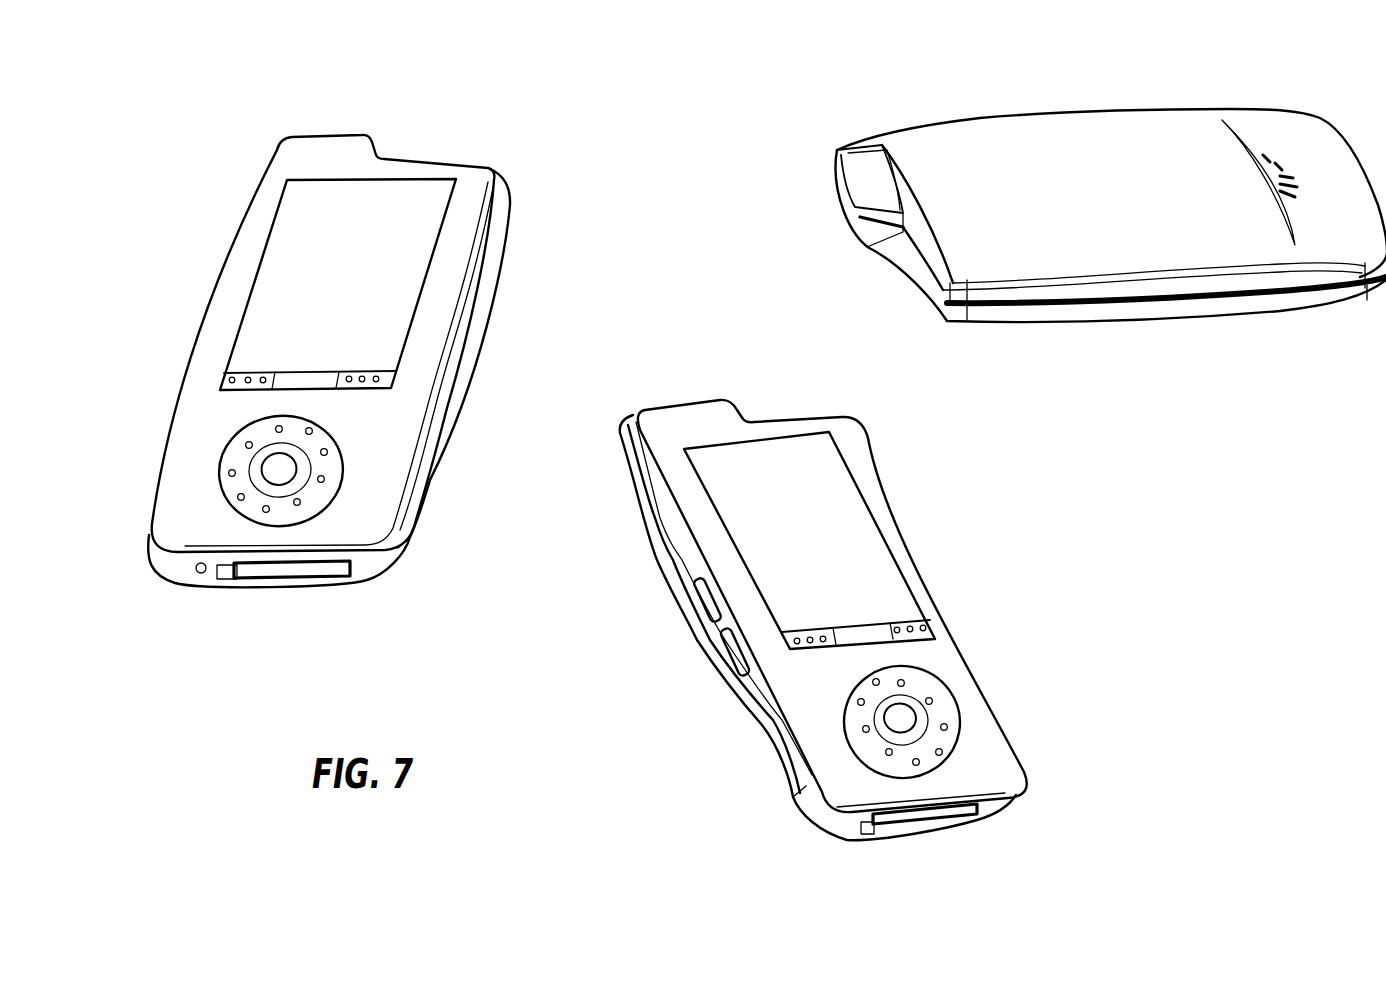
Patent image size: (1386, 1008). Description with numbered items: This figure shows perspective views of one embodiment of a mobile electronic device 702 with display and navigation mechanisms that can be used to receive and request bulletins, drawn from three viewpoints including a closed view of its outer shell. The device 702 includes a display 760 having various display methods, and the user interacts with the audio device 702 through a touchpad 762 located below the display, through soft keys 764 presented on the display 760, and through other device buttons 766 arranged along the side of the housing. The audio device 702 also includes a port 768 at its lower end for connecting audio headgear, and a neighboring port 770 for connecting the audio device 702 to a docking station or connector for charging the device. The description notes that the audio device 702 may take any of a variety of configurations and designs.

The mobile electronic device 702 is at (499, 129).
The display 760 is at (323, 247).
The touchpad 762 is at (224, 466).
The soft keys 764 is at (224, 378).
The device buttons 766 is at (700, 598).
The port for connecting audio headgear 768 is at (858, 837).
The port for connecting to a docking station 770 is at (948, 826).